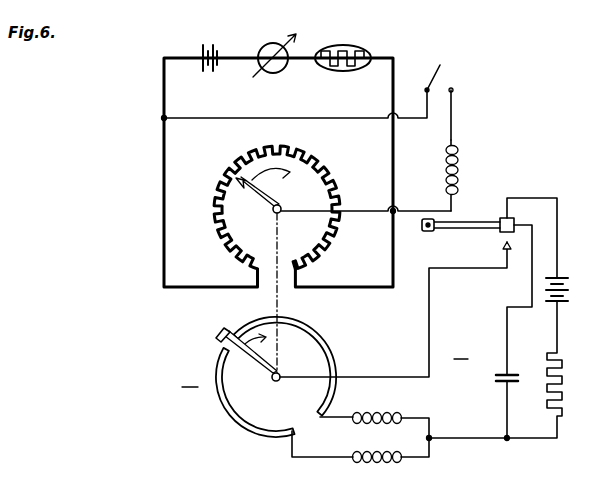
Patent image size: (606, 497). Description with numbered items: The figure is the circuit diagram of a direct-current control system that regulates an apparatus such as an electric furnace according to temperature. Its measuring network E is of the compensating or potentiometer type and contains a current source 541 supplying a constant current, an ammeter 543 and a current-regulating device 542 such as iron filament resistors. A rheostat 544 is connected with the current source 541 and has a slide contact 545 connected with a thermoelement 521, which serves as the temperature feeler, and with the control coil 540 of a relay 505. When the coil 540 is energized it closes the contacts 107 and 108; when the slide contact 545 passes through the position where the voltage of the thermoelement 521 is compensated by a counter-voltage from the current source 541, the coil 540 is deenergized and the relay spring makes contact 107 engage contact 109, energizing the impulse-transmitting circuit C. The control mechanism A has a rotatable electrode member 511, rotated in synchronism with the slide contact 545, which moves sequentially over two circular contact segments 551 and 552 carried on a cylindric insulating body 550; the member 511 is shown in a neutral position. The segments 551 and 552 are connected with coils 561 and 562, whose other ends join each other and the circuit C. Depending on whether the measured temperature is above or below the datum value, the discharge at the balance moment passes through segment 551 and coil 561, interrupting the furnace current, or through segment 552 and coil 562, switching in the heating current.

The measuring network E is at (178, 150).
The current source 541 is at (208, 47).
The ammeter 543 is at (272, 43).
The current-regulating device 542 is at (346, 46).
The thermoelement 521 is at (438, 76).
The control coil 540 is at (458, 165).
The rheostat 544 is at (298, 154).
The slide contact 545 is at (262, 200).
The contact segment 551 is at (318, 334).
The contact segment 552 is at (223, 402).
The insulating body 550 is at (296, 413).
The rotatable electrode member 511 is at (214, 336).
The coil 561 is at (373, 411).
The coil 562 is at (364, 461).
The commutator unit A is at (190, 379).
The impulse-transmitting circuit C is at (461, 351).
The contact 107 is at (519, 214).
The contact 108 is at (506, 208).
The contact 109 is at (503, 245).
The relay 505 is at (455, 230).